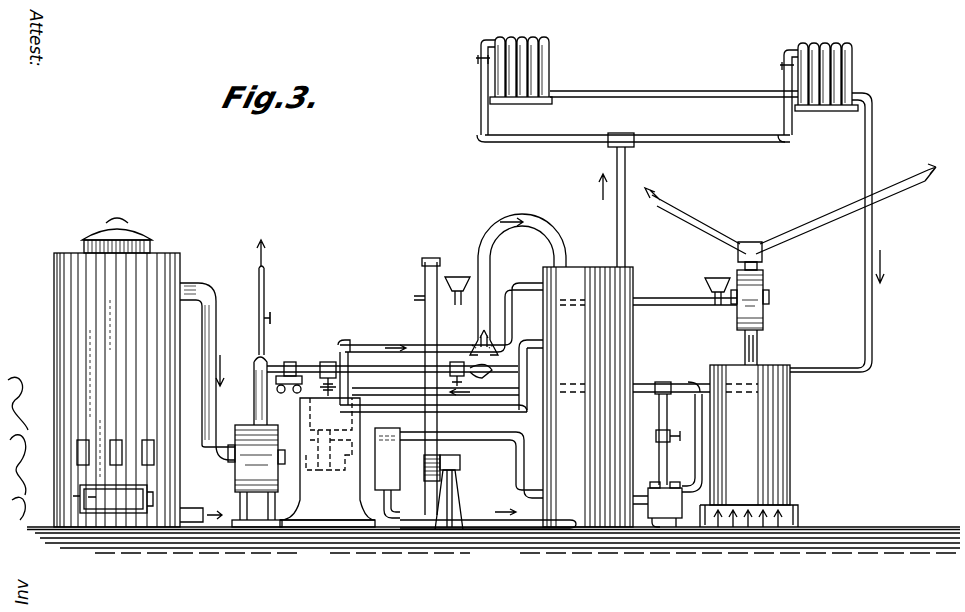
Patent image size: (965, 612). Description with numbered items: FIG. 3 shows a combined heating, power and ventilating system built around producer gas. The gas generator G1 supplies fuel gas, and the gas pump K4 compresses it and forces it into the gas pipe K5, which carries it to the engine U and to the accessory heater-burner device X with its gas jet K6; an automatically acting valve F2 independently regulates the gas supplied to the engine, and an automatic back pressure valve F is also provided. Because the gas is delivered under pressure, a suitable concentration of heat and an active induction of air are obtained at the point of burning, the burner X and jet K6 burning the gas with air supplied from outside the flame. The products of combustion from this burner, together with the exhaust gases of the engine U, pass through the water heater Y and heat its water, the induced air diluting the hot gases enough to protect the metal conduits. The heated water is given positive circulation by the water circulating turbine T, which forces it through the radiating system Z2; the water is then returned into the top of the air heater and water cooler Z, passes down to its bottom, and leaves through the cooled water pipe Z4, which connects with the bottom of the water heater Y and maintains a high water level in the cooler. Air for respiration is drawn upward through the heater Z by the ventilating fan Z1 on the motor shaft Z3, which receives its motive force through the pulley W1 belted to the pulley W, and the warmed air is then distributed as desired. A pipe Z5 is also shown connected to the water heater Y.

The gas generator G1 is at (121, 372).
The gas pump K4 is at (232, 480).
The gas pipe K5 is at (266, 352).
The automatically acting valve F2 is at (296, 365).
The engine U is at (330, 500).
The water circulating turbine T is at (388, 492).
The pulley W1 is at (428, 268).
The accessory heating device X is at (482, 325).
The gas jet K6 is at (480, 369).
The pulley W is at (462, 478).
The water heater Y is at (588, 397).
The radiating system Z2 is at (655, 97).
The ventilating fan Z1 is at (765, 292).
The pipe Z5 is at (680, 285).
The air heater and water cooler Z is at (758, 446).
The motor shaft Z3 is at (657, 440).
The cooled water pipe Z4 is at (697, 448).
The automatic back pressure valve F is at (668, 520).